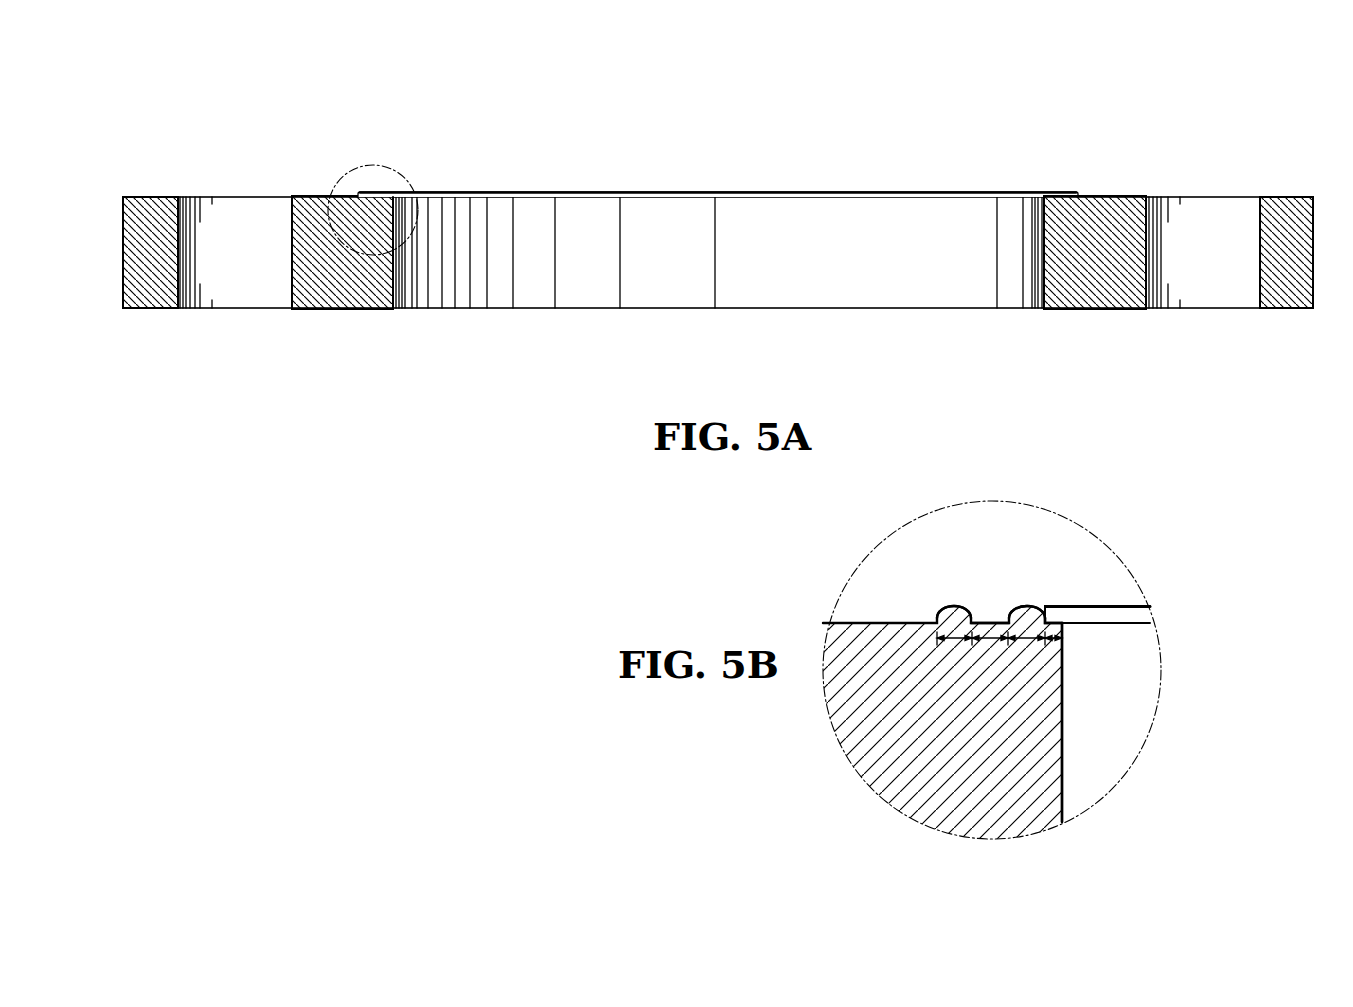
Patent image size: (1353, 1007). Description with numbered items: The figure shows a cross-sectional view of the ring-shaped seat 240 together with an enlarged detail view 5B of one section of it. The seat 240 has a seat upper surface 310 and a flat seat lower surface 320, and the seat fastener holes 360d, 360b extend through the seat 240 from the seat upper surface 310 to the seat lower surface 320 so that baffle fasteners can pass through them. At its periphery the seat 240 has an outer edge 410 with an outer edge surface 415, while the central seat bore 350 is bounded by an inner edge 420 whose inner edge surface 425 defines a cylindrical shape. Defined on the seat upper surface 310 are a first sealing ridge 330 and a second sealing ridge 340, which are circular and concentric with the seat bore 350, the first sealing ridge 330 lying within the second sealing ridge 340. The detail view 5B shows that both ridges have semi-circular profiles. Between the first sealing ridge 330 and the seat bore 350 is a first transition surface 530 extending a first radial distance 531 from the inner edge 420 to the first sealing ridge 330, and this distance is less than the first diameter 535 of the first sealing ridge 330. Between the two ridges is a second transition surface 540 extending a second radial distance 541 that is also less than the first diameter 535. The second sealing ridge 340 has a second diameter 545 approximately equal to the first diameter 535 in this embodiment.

In FIG. 5A, the seat 240 is at (1038, 65).
In FIG. 5A, the seat upper surface 310 is at (318, 193).
In FIG. 5A, the seat lower surface 320 is at (1097, 318).
In FIG. 5B, the first sealing ridge 330 is at (1032, 612).
In FIG. 5B, the second sealing ridge 340 is at (945, 612).
In FIG. 5A, the seat bore 350 is at (808, 310).
In FIG. 5B, the seat bore 350 is at (1130, 620).
In FIG. 5A, the seat fastener hole 360d is at (223, 197).
In FIG. 5A, the seat fastener hole 360b is at (1212, 195).
In FIG. 5A, the outer edge 410 is at (1317, 227).
In FIG. 5A, the outer edge surface 415 is at (1320, 267).
In FIG. 5A, the inner edge 420 is at (393, 268).
In FIG. 5B, the inner edge 420 is at (1062, 652).
In FIG. 5A, the inner edge surface 425 is at (900, 261).
In FIG. 5B, the first transition surface 530 is at (1052, 612).
In FIG. 5B, the first radial distance 531 is at (1053, 645).
In FIG. 5B, the first diameter 535 is at (1026, 645).
In FIG. 5B, the second transition surface 540 is at (988, 617).
In FIG. 5B, the second radial distance 541 is at (988, 645).
In FIG. 5B, the second diameter 545 is at (954, 645).
In FIG. 5A, the detail view 5B is at (413, 180).